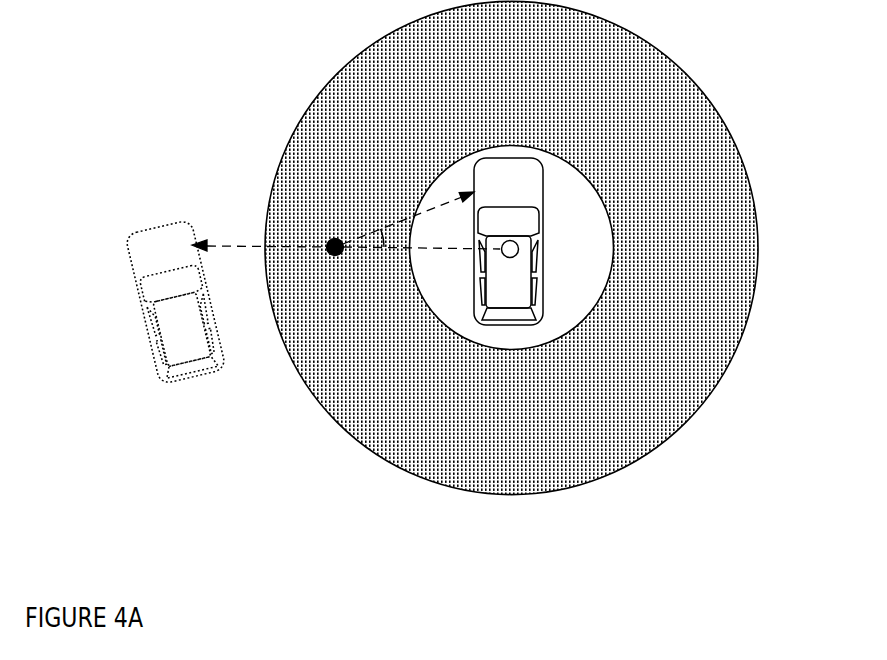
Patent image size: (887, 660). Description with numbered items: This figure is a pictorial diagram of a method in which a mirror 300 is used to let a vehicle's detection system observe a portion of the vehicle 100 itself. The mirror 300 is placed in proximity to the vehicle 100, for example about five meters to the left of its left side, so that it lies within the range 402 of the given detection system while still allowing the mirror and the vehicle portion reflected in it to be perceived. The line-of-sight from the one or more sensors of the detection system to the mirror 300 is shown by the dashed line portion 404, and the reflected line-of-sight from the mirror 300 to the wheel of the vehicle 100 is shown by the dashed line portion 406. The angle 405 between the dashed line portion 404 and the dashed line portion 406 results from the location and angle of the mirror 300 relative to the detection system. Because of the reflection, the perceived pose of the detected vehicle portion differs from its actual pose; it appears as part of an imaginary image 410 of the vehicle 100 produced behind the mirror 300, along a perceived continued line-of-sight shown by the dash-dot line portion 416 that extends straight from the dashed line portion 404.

The vehicle 100 is at (543, 251).
The mirror 300 is at (325, 246).
The range of the given detection system 402 is at (523, 90).
The dashed line portion 404 is at (421, 259).
The angle 405 is at (386, 241).
The dashed line portion 406 is at (408, 218).
The imaginary image 410 is at (200, 377).
The dash-dot line portion 416 is at (259, 238).